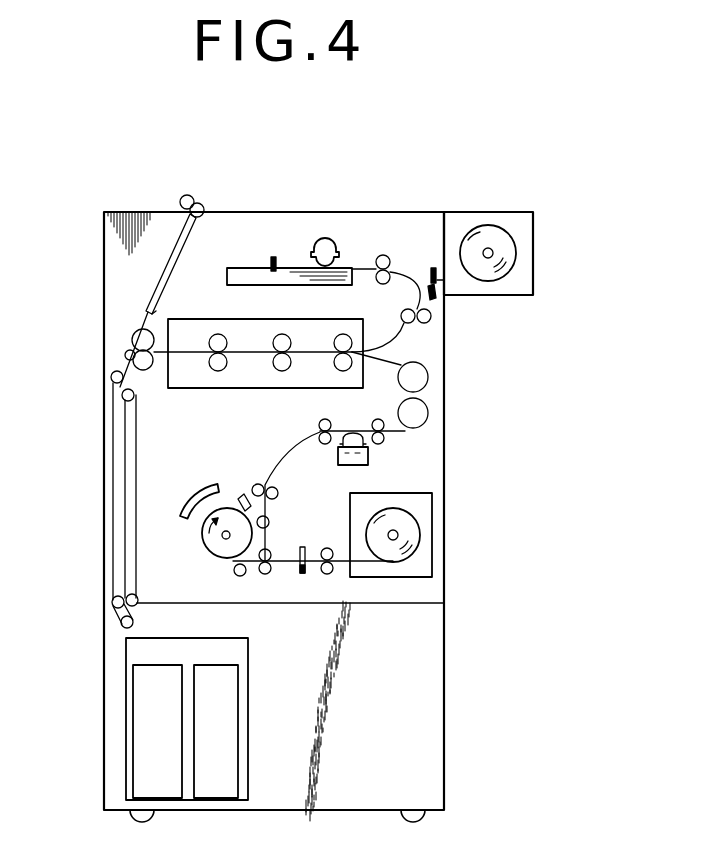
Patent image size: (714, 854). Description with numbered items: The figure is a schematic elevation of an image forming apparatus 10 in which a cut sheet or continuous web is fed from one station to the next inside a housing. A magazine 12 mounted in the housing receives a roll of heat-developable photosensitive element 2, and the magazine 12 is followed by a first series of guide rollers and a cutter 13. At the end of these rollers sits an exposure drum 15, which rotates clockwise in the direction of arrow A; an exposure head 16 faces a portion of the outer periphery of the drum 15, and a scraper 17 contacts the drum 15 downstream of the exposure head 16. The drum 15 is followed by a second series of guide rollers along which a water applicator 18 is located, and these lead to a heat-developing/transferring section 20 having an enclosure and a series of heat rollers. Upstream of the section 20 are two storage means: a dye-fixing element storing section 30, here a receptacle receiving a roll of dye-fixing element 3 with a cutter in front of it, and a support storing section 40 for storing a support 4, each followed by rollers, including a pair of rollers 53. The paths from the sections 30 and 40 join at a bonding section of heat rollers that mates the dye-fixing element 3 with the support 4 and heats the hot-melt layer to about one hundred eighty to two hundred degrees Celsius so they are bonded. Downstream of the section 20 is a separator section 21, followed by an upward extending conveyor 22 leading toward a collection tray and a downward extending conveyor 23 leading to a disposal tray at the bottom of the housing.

The image forming apparatus 10 is at (312, 184).
The dye-fixing element storing section 30 is at (522, 211).
The dye-fixing element 3 is at (516, 257).
The downward extending conveyor 23 is at (168, 247).
The heat-developing/transferring section 20 is at (206, 319).
The separator section 21 is at (125, 352).
The support 4 is at (343, 267).
The support storing section 40 is at (305, 238).
The pinch rollers 53 is at (431, 318).
The water applicator 18 is at (368, 457).
The exposure drum 15 is at (202, 537).
The exposure head 16 is at (186, 508).
The scraper 17 is at (244, 497).
The cutter 13 is at (304, 578).
The magazine 12 is at (423, 512).
The heat-developable photosensitive element 2 is at (405, 548).
The upward extending conveyor 22 is at (137, 653).